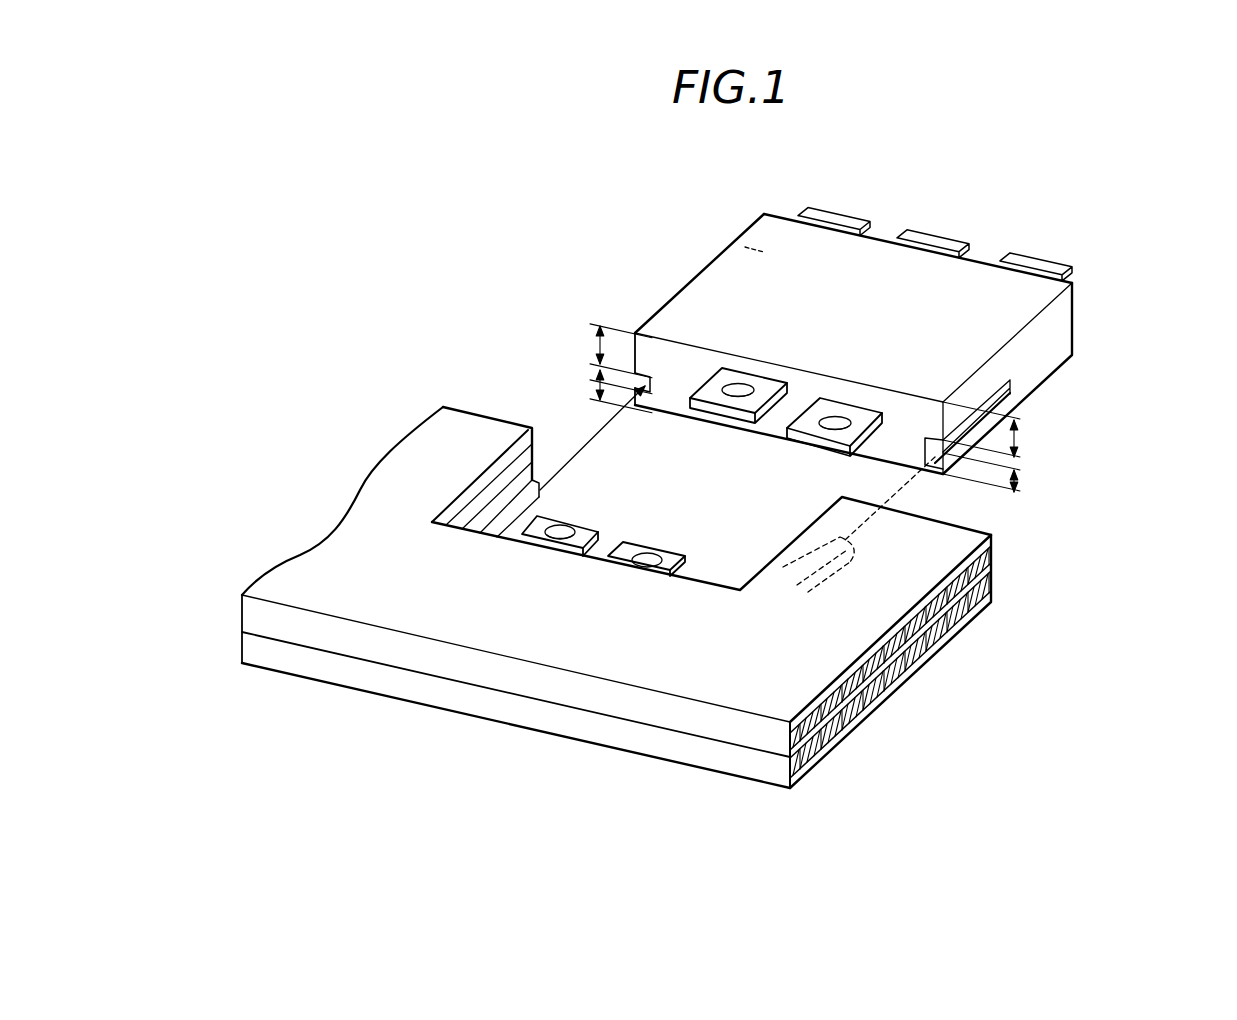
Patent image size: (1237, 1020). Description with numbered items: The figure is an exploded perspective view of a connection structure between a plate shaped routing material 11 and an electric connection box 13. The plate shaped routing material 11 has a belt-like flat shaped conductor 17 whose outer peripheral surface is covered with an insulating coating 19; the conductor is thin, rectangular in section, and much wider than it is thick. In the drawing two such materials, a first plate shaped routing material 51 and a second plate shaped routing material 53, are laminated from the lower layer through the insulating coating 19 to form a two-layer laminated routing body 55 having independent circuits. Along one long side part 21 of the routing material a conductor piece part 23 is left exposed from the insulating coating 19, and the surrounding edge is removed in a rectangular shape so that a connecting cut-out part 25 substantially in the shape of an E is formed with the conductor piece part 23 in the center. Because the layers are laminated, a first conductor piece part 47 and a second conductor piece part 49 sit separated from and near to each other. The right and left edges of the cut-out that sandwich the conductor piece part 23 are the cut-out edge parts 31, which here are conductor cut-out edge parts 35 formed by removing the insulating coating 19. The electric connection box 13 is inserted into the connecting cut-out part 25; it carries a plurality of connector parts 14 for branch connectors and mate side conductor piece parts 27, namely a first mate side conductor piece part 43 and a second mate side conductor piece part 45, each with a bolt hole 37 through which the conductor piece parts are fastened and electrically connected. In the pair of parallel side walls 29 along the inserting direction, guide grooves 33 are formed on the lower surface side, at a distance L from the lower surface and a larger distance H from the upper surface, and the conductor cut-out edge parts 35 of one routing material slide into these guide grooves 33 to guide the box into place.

The plate shaped routing material 11 is at (974, 661).
The electric connection box 13 is at (865, 339).
The connector parts 14 is at (843, 214).
The flat shaped conductor 17 is at (848, 686).
The insulating coating 19 is at (328, 560).
The one long side part 21 is at (478, 412).
The conductor piece part 23 is at (649, 512).
The connecting cut-out part 25 is at (803, 490).
The mate side conductor piece part 27 is at (809, 357).
The side walls 29 is at (743, 246).
The cut-out edge parts 31 is at (588, 602).
The guide grooves 33 is at (651, 385).
The conductor cut-out edge parts 35 is at (487, 523).
The bolt hole 37 is at (746, 391).
The first mate side conductor piece part 43 is at (857, 374).
The second mate side conductor piece part 45 is at (736, 372).
The first conductor piece part 47 is at (673, 556).
The second conductor piece part 49 is at (574, 525).
The first plate shaped routing material 51 is at (953, 647).
The second plate shaped routing material 53 is at (992, 546).
The laminated routing body 55 is at (1033, 598).